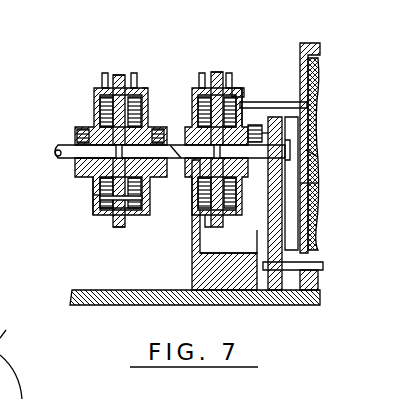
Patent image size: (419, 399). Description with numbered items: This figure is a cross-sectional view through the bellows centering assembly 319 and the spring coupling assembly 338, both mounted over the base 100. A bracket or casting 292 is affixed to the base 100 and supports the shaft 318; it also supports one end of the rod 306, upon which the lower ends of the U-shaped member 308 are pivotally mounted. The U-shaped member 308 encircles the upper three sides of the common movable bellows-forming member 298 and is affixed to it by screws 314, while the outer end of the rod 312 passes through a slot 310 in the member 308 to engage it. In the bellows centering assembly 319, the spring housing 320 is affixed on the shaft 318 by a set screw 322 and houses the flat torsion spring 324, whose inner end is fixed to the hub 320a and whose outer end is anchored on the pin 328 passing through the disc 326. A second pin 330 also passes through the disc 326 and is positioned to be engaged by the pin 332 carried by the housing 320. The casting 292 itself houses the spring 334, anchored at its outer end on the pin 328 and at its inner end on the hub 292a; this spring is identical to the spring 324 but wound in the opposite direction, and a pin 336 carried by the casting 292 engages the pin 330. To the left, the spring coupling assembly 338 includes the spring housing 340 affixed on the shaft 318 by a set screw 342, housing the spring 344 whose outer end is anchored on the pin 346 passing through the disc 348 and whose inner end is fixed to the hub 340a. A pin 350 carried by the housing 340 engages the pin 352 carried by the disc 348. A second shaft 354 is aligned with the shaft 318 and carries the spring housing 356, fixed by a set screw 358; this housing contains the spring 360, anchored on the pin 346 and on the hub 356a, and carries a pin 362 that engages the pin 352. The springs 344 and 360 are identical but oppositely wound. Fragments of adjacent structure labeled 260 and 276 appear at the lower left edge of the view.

The base 100 is at (237, 305).
The bracket (casting) 292 is at (192, 271).
The hub of casting 292 292a is at (228, 241).
The movable bellows-forming member 298 is at (320, 63).
The slot 310 is at (308, 92).
The rod 312 is at (303, 107).
The screws 314 is at (318, 157).
The U-shaped member 308 is at (318, 185).
The bellows centering assembly 319 is at (240, 52).
The spring housing 320 is at (238, 212).
The hub of housing 320 320a is at (282, 180).
The set screw 322 is at (268, 133).
The rod 306 is at (323, 266).
The second shaft 354 is at (58, 150).
The shaft 318 is at (178, 158).
The spring coupling assembly 338 is at (90, 88).
The pin 346 is at (113, 220).
The pin 362 is at (102, 78).
The pin 352 is at (120, 75).
The pin 350 is at (134, 74).
The spring 344 is at (160, 84).
The set screw 342 is at (158, 128).
The set screw 358 is at (82, 128).
The hub of housing 356 356a is at (80, 170).
The hub of housing 340 340a is at (97, 184).
The spring housing 356 is at (97, 196).
The spring 360 is at (100, 206).
The spring housing 340 is at (148, 198).
The disc 348 is at (118, 228).
The second pin 330 is at (198, 73).
The pin 328 is at (205, 232).
The spring 334 is at (196, 216).
The pin 336 is at (219, 72).
The disc 326 is at (228, 72).
The pin 332 is at (238, 77).
The flat torsion spring 324 is at (244, 93).
The adjacent member 260 is at (19, 324).
The adjacent member 276 is at (8, 345).